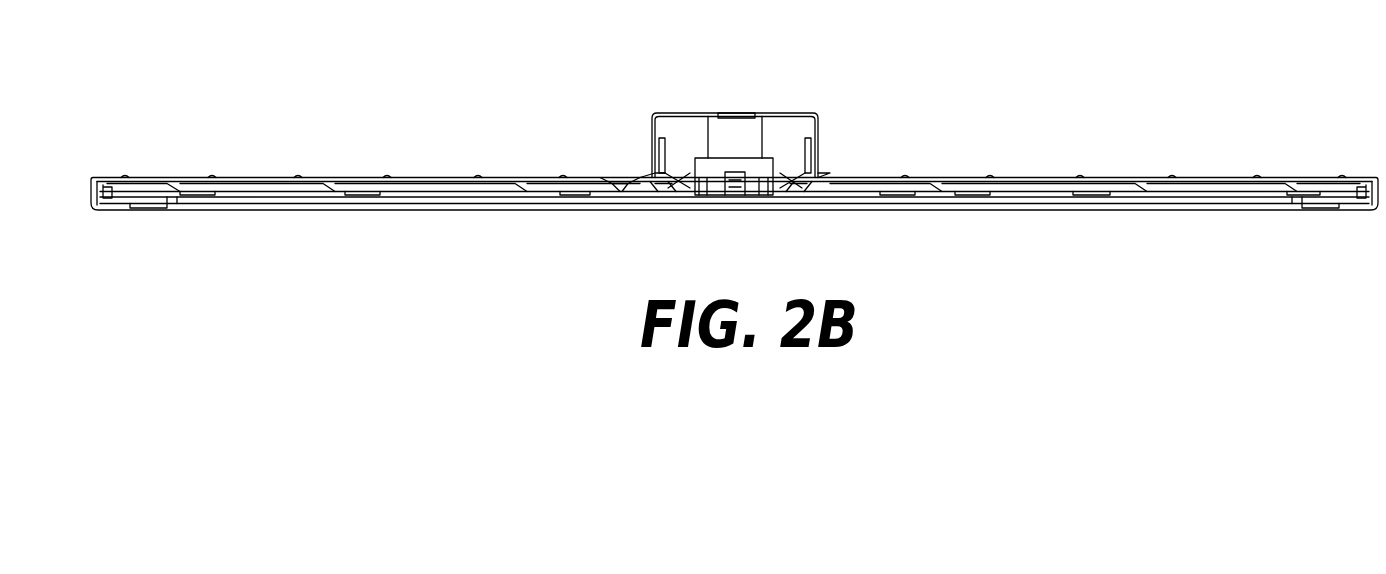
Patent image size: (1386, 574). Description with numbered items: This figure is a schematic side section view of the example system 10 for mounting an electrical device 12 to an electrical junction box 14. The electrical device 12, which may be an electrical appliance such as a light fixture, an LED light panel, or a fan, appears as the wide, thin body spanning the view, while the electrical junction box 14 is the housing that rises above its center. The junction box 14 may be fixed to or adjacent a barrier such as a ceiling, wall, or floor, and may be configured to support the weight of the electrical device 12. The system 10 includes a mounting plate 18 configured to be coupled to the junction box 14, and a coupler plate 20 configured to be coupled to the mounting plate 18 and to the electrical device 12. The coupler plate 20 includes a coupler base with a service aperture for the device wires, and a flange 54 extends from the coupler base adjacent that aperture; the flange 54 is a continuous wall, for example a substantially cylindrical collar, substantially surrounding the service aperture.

The system 10 is at (865, 100).
The electrical device 12 is at (1068, 212).
The electrical junction box 14 is at (676, 113).
The mounting plate 18 is at (645, 178).
The coupler plate 20 is at (660, 185).
The flange 54 is at (773, 113).